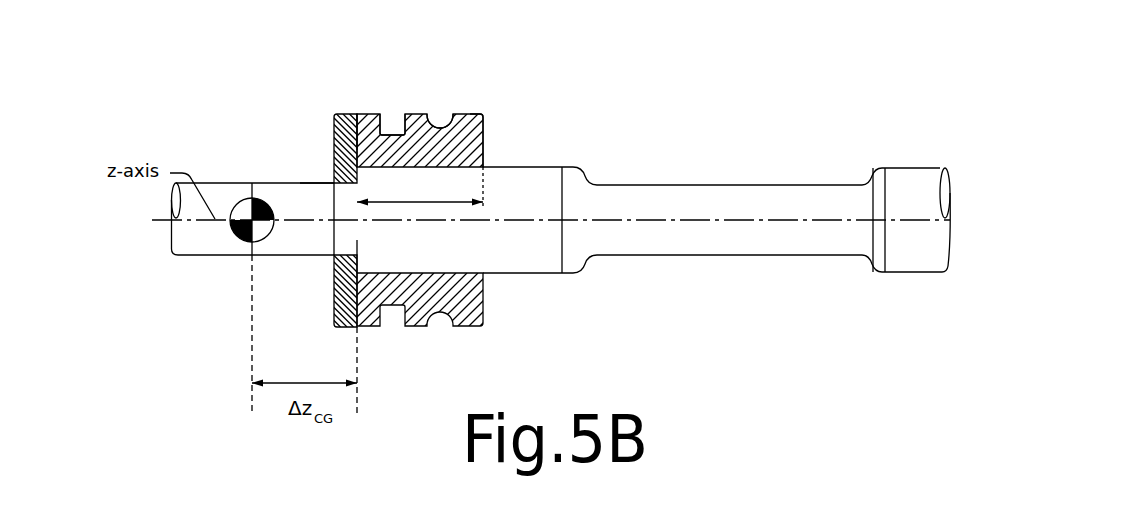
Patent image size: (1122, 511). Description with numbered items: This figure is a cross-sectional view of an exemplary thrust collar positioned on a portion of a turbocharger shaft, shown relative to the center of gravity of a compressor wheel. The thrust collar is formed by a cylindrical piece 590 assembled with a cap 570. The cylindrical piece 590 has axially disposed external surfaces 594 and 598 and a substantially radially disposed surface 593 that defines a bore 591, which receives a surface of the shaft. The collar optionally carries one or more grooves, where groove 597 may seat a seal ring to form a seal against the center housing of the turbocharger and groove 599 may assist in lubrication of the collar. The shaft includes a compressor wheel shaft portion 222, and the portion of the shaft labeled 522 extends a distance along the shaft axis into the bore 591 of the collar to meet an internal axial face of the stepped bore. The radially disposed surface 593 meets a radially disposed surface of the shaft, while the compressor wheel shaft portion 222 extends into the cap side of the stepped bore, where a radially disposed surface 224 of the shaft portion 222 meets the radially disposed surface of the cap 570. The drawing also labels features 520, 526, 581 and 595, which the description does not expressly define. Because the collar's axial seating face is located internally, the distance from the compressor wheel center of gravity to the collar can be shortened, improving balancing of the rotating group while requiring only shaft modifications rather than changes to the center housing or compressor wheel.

The compressor wheel shaft portion 222 is at (220, 240).
The radially disposed surface 224 is at (345, 257).
The reduced-diameter section of shaft 520 is at (729, 218).
The shaft portion received in the thrust collar 522 is at (442, 194).
The inner face of flange 526 is at (358, 264).
The cap 570 is at (335, 132).
The shaft shoulder 581 is at (318, 172).
The cylindrical piece 590 is at (454, 160).
The bore 591 is at (520, 156).
The radially disposed surface 593 is at (484, 152).
The axially disposed external surface 594 is at (483, 116).
The outer face of flange 595 is at (334, 267).
The groove 597 is at (382, 112).
The axially disposed external surface 598 is at (355, 115).
The groove 599 is at (428, 116).